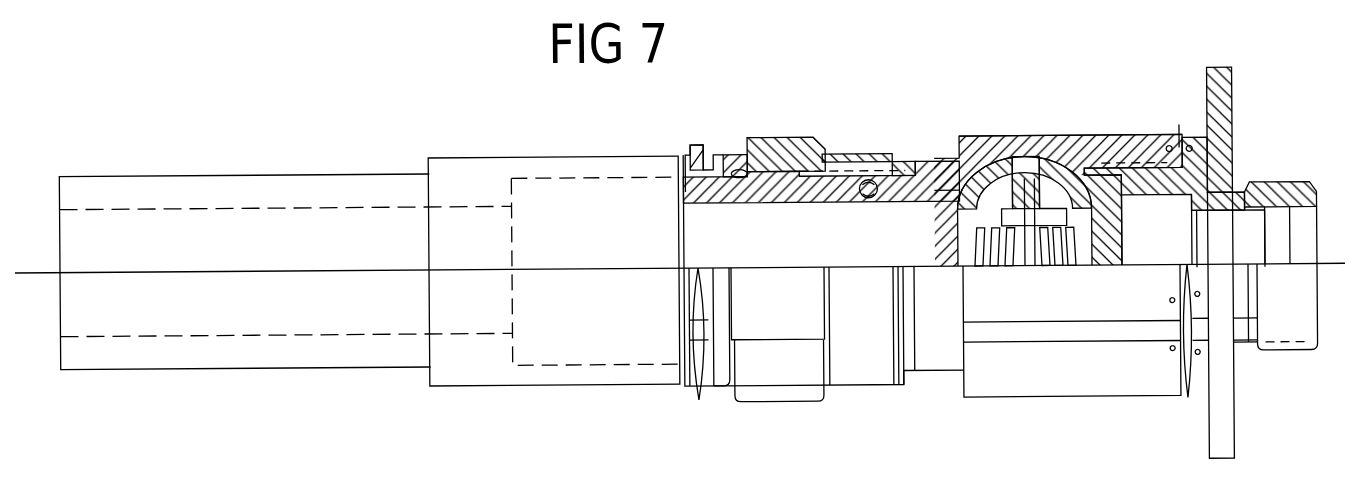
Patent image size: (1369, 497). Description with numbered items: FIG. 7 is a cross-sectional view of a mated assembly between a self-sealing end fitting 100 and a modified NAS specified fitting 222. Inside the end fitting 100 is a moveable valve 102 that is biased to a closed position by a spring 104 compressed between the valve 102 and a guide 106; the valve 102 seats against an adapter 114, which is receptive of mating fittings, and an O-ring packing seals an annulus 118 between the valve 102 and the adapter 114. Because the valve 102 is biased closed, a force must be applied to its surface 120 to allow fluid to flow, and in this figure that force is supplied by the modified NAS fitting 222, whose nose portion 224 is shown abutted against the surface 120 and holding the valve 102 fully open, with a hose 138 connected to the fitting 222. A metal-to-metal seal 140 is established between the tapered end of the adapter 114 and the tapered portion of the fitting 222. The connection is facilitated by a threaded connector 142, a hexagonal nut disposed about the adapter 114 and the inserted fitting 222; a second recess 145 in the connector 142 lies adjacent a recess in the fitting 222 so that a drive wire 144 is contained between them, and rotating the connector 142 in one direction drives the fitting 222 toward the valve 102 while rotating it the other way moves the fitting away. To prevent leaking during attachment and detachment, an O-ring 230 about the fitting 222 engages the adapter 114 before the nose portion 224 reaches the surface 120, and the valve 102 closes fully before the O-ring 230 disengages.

The self-sealing end fitting 100 is at (1048, 86).
The valve 102 is at (1032, 180).
The spring 104 is at (1084, 268).
The guide 106 is at (1088, 150).
The adapter 114 is at (940, 150).
The annulus 118 is at (915, 163).
The surface 120 is at (810, 195).
The hose 138 is at (218, 172).
The metal-to-metal seal 140 is at (824, 158).
The threaded connector 142 is at (796, 138).
The drive wire 144 is at (740, 170).
The second recess 145 is at (728, 156).
The modified NAS specified fitting 222 is at (690, 146).
The nose portion 224 is at (864, 193).
The O-ring 230 is at (876, 199).